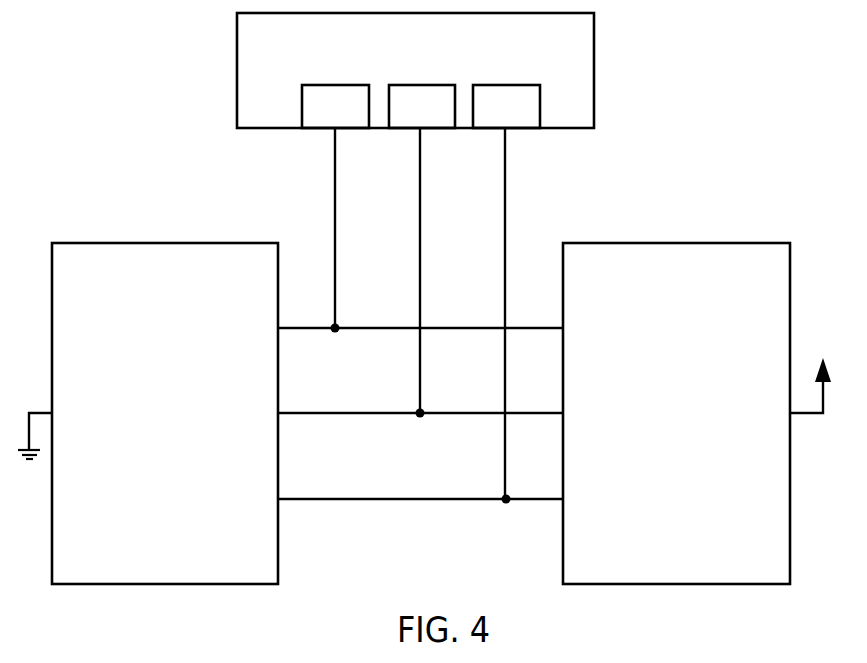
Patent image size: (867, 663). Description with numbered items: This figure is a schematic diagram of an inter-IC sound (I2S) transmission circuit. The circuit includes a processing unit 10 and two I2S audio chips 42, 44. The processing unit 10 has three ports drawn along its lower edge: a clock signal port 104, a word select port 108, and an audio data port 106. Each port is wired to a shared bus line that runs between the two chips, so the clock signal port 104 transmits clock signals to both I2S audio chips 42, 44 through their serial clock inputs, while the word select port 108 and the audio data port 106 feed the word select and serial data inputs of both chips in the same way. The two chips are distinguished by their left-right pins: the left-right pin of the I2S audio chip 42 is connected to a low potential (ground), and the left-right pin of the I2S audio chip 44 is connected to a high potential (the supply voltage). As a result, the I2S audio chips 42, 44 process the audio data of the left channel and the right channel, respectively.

The processing unit 10 is at (237, 39).
The clock signal port 104 is at (335, 209).
The word select port 108 is at (422, 251).
The audio data port 106 is at (506, 294).
The I2S audio chip 42 is at (82, 242).
The I2S audio chip 44 is at (620, 242).